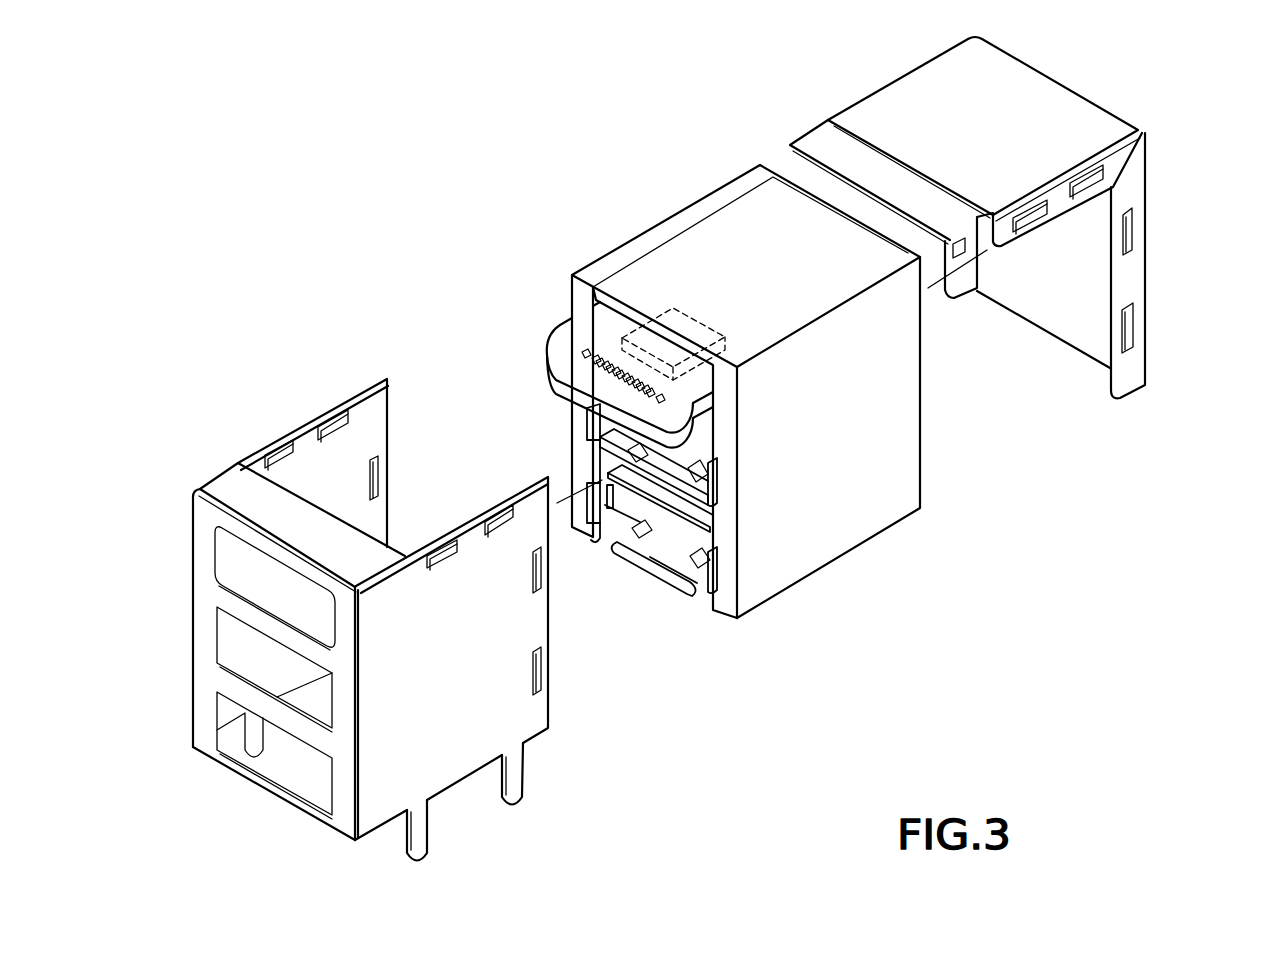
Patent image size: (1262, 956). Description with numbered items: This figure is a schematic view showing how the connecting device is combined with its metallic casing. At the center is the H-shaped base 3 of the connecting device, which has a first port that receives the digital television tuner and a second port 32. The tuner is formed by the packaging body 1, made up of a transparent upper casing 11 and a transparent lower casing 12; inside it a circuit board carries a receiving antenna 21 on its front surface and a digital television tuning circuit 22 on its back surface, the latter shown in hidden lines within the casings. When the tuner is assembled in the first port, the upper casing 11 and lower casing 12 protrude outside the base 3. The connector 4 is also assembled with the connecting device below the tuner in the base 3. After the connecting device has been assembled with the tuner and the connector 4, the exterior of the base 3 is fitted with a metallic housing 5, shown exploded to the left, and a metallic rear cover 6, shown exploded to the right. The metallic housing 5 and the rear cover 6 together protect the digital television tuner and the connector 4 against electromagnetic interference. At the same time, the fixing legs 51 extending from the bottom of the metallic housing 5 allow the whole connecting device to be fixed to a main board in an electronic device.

The packaging body 1 is at (591, 324).
The upper casing 11 is at (568, 345).
The lower casing 12 is at (555, 378).
The receiving antenna 21 is at (590, 380).
The digital television tuning circuit 22 is at (668, 317).
The base 3 is at (743, 413).
The second port 32 is at (597, 460).
The connector 4 is at (641, 571).
The metallic housing 5 is at (373, 620).
The fixing legs 51 is at (518, 773).
The metallic rear cover 6 is at (1133, 278).